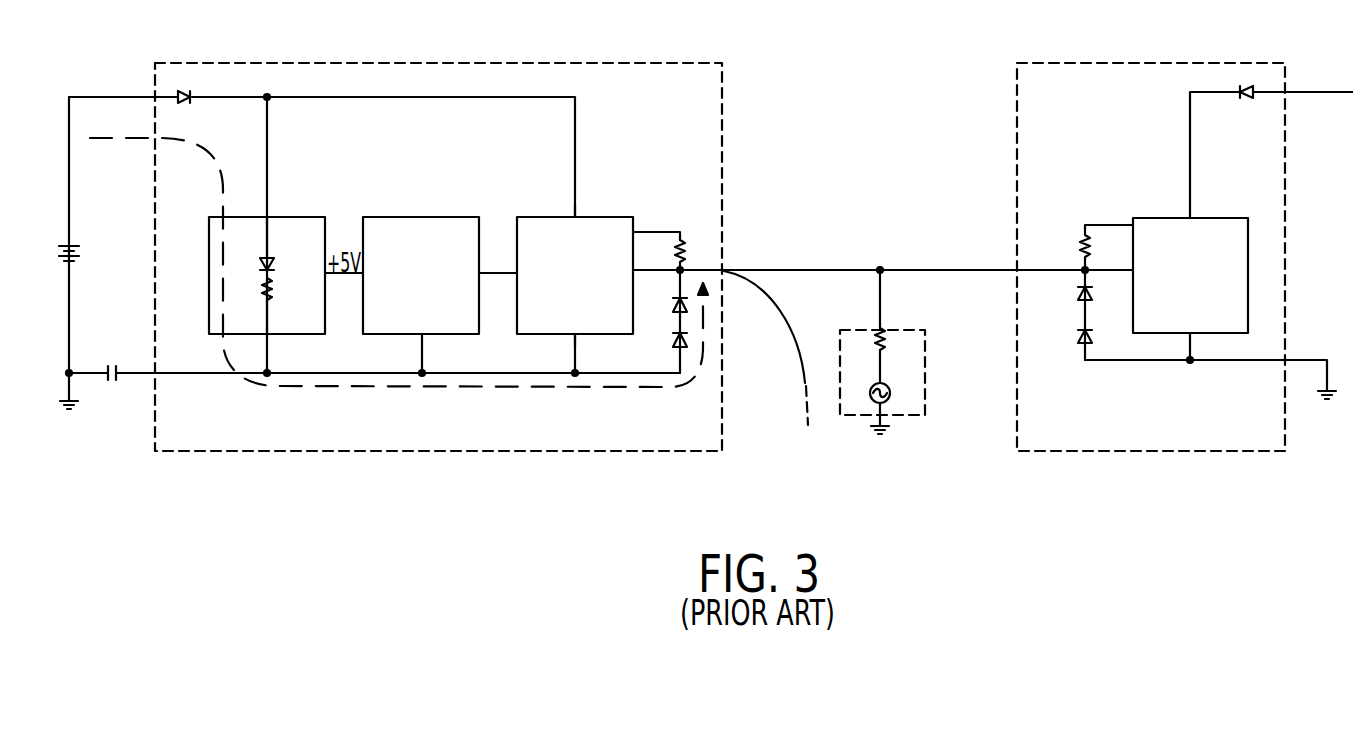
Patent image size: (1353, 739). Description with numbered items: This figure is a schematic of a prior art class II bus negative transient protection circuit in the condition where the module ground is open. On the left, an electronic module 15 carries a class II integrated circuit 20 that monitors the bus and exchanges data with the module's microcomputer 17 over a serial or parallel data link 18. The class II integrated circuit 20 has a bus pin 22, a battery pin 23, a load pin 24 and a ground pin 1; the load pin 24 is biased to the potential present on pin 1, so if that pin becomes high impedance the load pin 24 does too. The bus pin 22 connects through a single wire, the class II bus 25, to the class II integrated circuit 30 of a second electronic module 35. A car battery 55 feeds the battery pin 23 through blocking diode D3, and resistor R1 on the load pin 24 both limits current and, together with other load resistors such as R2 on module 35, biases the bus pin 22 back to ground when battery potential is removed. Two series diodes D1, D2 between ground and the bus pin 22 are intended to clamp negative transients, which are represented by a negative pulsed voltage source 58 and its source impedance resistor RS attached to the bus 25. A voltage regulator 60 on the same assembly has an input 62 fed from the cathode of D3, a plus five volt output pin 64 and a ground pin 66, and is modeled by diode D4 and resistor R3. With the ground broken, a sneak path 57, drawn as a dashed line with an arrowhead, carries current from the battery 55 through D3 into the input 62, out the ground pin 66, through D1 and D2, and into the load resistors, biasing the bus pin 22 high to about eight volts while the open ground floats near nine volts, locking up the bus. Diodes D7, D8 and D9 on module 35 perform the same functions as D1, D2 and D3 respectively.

The electronic module 15 is at (435, 453).
The microcomputer 17 is at (422, 216).
The data link 18 is at (512, 270).
The class II integrated circuit 20 is at (610, 216).
The bus pin 22 is at (627, 287).
The battery pin 23 is at (586, 252).
The load pin 24 is at (627, 252).
The ground pin 1 is at (594, 332).
The class II bus 25 is at (795, 265).
The class II integrated circuit 30 is at (1160, 217).
The electronic module 35 is at (1172, 458).
The car battery 55 is at (75, 246).
The sneak path 57 is at (508, 412).
The negative pulsed voltage source 58 is at (928, 392).
The voltage regulator 60 is at (307, 217).
The regulator input 62 is at (296, 250).
The output pin 64 is at (319, 288).
The ground pin 66 is at (296, 332).
The diode D1 is at (690, 343).
The diode D2 is at (690, 305).
The blocking diode D3 is at (187, 104).
The diode D4 is at (262, 265).
The diode D7 is at (1080, 343).
The diode D8 is at (1080, 300).
The diode D9 is at (1248, 100).
The resistor R1 is at (690, 250).
The load resistor R2 is at (1083, 243).
The resistor R3 is at (262, 297).
The source impedance resistor RS is at (885, 345).